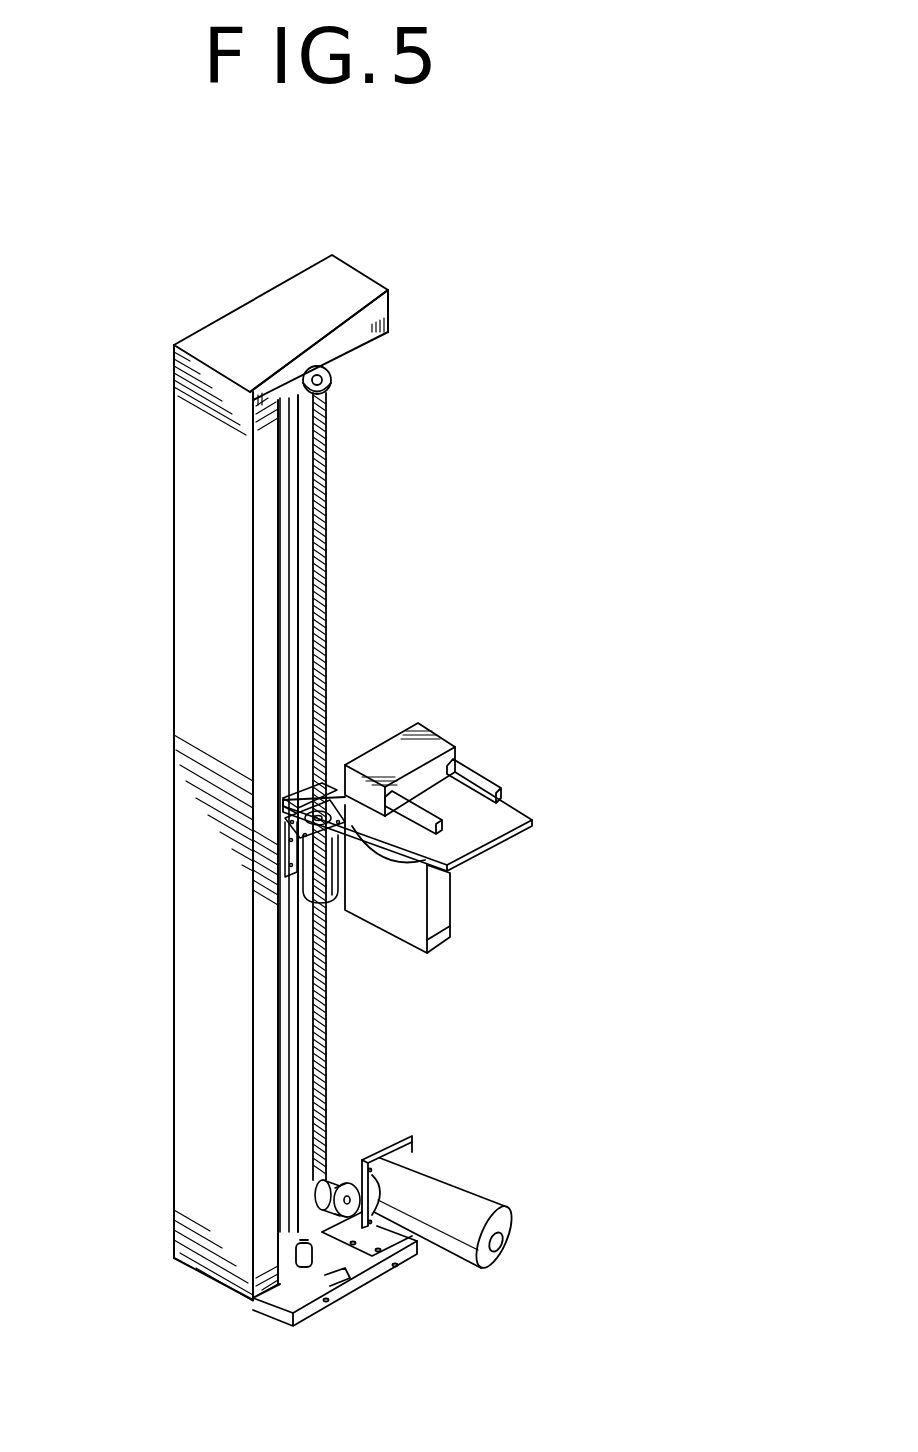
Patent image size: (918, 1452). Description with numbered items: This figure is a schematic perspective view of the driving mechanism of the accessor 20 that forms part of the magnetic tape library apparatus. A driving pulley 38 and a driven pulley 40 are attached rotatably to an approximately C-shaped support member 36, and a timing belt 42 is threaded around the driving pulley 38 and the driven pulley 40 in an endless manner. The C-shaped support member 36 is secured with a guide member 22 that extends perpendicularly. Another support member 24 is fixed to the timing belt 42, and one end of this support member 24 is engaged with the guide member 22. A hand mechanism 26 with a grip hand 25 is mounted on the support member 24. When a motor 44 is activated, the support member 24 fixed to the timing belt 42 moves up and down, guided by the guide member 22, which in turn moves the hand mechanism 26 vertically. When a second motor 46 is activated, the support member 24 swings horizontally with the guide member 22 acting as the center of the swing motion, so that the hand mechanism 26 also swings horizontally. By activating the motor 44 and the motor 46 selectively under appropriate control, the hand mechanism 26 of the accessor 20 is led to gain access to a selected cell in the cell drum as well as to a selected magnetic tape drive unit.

The accessor 20 is at (320, 765).
The guide member 22 is at (282, 477).
The support member 24 is at (293, 790).
The grip hand 25 is at (392, 742).
The hand mechanism 26 is at (487, 770).
The C-shaped support member 36 is at (188, 515).
The driving pulley 38 is at (327, 1122).
The driven pulley 40 is at (333, 379).
The timing belt 42 is at (326, 578).
The motor 44 is at (480, 1210).
The motor 46 is at (320, 898).